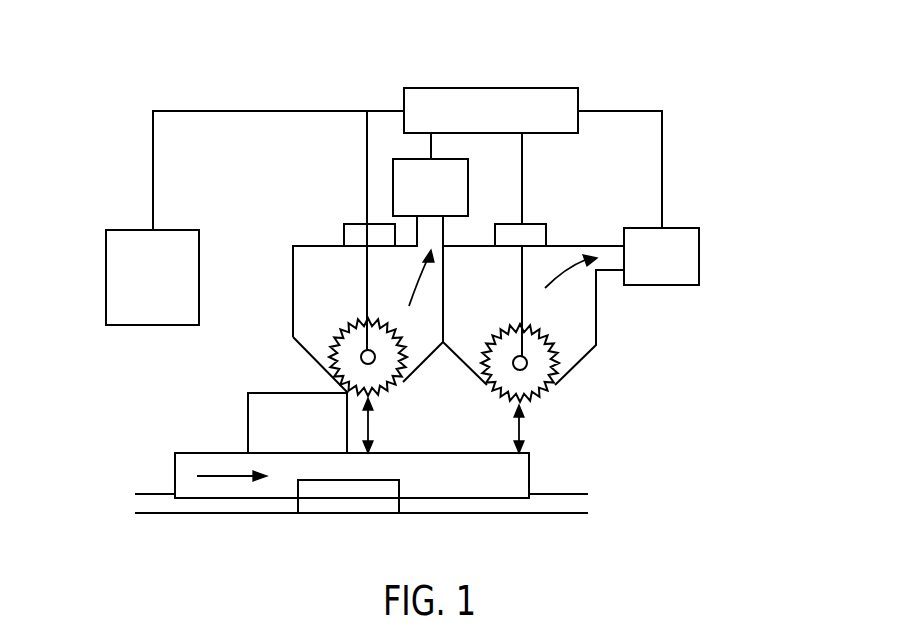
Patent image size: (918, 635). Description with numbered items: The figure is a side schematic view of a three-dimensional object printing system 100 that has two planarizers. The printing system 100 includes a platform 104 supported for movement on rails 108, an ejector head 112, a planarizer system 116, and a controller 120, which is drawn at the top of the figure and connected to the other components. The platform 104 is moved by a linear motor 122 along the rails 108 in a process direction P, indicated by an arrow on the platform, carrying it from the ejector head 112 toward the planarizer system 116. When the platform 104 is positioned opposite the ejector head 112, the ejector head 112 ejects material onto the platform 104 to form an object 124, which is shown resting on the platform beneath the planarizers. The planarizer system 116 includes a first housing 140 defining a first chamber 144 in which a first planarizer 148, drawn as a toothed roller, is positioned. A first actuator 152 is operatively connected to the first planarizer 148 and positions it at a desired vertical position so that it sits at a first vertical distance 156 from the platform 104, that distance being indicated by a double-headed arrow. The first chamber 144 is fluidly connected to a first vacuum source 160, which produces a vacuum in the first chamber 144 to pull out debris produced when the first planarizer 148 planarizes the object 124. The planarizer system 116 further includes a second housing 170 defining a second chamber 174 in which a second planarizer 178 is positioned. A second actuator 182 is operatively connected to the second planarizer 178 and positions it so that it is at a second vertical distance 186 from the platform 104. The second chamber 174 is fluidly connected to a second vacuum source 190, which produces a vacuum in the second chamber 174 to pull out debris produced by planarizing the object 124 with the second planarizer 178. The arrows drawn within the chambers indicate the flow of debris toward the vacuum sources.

The three-dimensional object printing system 100 is at (152, 78).
The platform 104 is at (270, 488).
The rails 108 is at (550, 505).
The ejector head 112 is at (178, 230).
The planarizer system 116 is at (700, 178).
The controller 120 is at (578, 103).
The linear motor 122 is at (335, 505).
The object 124 is at (248, 425).
The first housing 140 is at (293, 262).
The first chamber 144 is at (305, 306).
The first planarizer 148 is at (337, 352).
The first actuator 152 is at (344, 232).
The first vertical distance 156 is at (378, 426).
The first vacuum source 160 is at (468, 178).
The second housing 170 is at (596, 325).
The second chamber 174 is at (460, 298).
The second planarizer 178 is at (555, 365).
The second actuator 182 is at (546, 233).
The second vertical distance 186 is at (522, 431).
The second vacuum source 190 is at (699, 255).
The process direction P is at (209, 478).